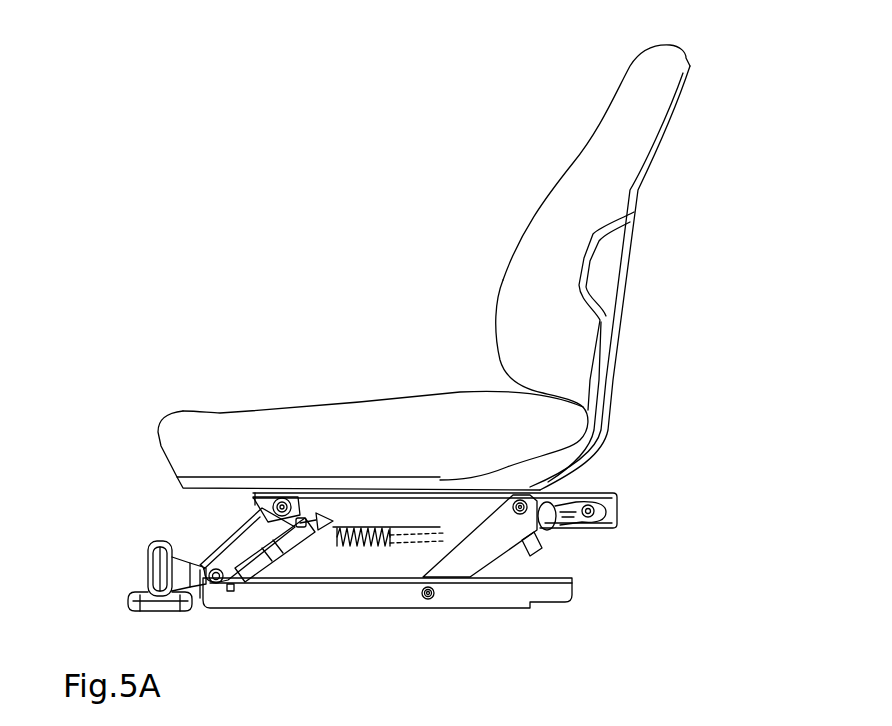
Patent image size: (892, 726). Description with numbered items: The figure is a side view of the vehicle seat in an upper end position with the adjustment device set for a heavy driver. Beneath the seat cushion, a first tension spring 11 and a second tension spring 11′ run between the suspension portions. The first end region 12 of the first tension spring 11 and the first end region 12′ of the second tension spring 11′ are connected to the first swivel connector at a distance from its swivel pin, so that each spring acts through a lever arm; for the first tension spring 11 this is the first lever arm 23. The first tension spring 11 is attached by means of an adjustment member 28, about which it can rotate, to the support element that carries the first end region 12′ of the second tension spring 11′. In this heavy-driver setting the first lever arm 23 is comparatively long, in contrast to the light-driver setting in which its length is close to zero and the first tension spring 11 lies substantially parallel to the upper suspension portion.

The adjustment member 28 is at (254, 543).
The first lever arm 23 is at (295, 505).
The first end region of the second tension spring 12′ is at (321, 516).
The first end region of the first tension spring 12 is at (312, 540).
The first tension spring 11 is at (338, 548).
The second tension spring 11′ is at (376, 548).